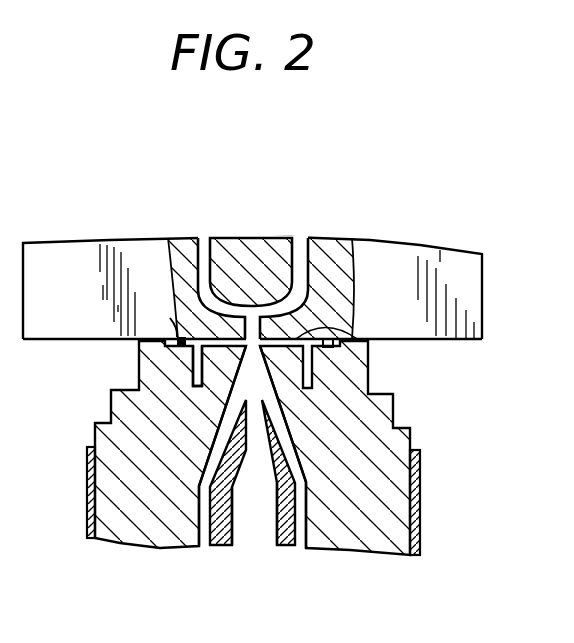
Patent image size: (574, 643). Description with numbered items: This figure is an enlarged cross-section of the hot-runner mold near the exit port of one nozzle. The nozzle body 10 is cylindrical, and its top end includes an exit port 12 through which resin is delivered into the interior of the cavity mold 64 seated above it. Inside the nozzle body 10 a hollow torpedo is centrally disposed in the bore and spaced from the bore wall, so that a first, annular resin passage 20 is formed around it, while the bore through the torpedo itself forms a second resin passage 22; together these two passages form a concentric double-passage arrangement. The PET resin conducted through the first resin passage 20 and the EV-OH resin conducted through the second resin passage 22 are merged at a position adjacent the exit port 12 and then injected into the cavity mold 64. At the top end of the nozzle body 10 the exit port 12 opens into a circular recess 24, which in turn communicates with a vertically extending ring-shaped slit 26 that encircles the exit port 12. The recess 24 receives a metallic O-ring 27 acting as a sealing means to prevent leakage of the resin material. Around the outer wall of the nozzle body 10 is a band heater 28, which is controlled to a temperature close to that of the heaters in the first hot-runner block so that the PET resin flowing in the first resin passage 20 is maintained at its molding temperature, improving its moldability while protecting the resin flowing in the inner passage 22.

The cavity mold 64 is at (469, 307).
The nozzle body 10 is at (367, 410).
The exit port 12 is at (245, 390).
The first annular resin passage 20 is at (207, 520).
The second resin passage 22 is at (250, 543).
The circular recess 24 is at (371, 342).
The ring-shaped slit 26 is at (192, 367).
The metallic O-ring 27 is at (180, 338).
The band heater 28 is at (421, 489).